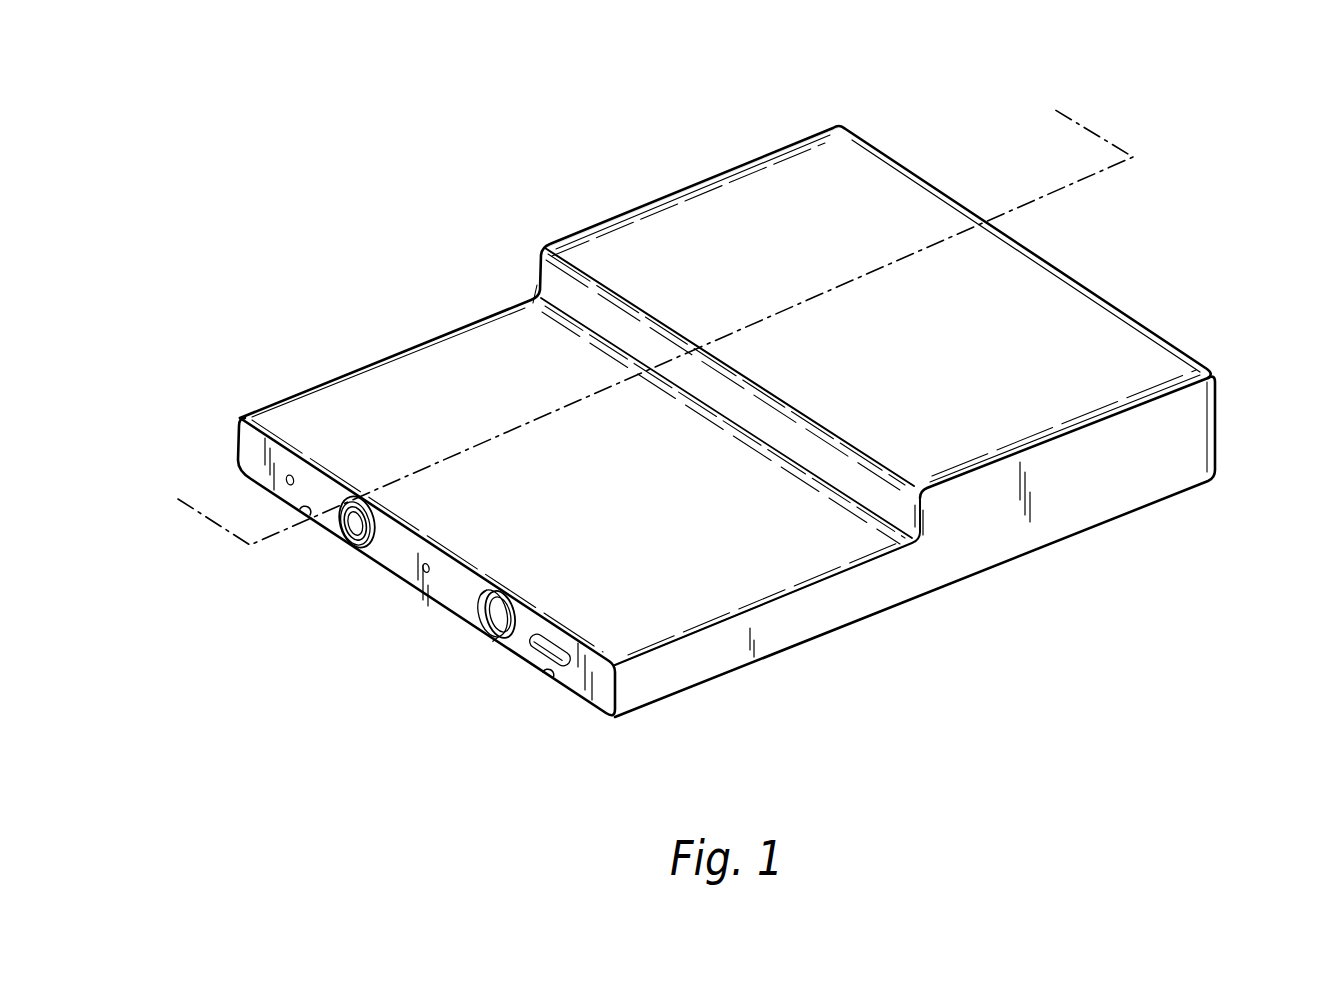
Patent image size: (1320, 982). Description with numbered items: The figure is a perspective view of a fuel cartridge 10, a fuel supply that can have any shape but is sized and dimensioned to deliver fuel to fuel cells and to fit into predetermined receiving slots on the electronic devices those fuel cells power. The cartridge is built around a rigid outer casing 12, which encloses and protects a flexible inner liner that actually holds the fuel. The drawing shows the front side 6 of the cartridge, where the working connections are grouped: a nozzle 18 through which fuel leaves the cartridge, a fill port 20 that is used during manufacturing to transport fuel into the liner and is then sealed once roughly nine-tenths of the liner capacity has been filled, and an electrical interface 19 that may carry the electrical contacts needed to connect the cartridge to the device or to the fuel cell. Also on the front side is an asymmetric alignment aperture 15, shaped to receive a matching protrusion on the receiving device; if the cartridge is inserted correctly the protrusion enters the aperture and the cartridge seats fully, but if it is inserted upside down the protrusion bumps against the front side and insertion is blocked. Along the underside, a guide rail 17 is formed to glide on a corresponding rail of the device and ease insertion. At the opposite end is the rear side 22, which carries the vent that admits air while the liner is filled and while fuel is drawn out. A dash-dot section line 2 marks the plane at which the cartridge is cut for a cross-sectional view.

The fuel cartridge 10 is at (717, 164).
The outer casing 12 is at (985, 384).
The rear side 22 is at (1224, 428).
The front side wall 6 is at (246, 452).
The asymmetric alignment aperture 15 is at (290, 476).
The guide rail 17 is at (305, 514).
The nozzle 18 is at (372, 556).
The electrical interface 19 is at (547, 649).
The fill port 20 is at (483, 616).
The section line 2- 2 is at (650, 320).